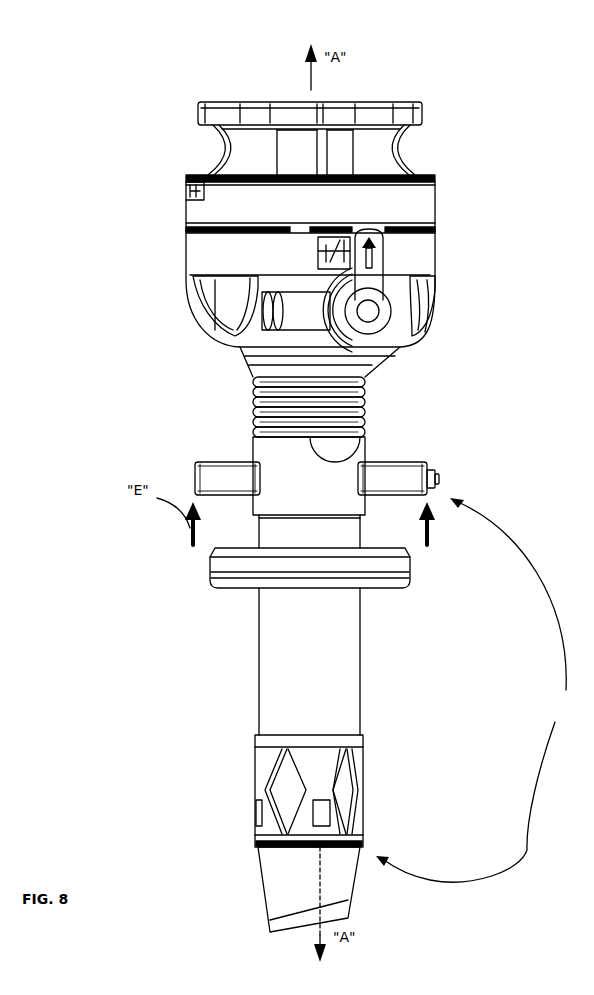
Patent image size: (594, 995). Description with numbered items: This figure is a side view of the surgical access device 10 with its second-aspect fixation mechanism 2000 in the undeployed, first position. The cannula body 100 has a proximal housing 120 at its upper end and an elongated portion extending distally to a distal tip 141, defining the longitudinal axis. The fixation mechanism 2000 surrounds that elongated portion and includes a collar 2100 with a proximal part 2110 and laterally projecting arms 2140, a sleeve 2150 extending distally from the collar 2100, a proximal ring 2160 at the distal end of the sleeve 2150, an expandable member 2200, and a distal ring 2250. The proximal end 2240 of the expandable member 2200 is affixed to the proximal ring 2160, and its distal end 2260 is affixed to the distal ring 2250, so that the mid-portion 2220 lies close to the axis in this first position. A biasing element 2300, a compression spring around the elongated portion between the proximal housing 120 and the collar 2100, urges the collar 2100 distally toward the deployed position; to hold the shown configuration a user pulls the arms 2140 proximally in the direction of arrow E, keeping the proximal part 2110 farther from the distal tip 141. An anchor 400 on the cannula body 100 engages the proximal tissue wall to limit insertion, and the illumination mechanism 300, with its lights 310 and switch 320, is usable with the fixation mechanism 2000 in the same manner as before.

The surgical access device 10 is at (472, 212).
The proximal housing 120 is at (427, 265).
The biasing element 2300 is at (345, 397).
The proximal part 2110 is at (327, 472).
The collar 2100 is at (362, 465).
The switch 320 is at (440, 477).
The fixation mechanism 2000 is at (530, 476).
The arms 2140 is at (428, 488).
The sleeve 2150 is at (345, 535).
The anchor 400 is at (222, 568).
The cannula body 100 is at (436, 683).
The illumination mechanism 300 is at (472, 690).
The proximal ring 2160 is at (280, 740).
The proximal end 2240 is at (333, 750).
The expandable member 2200 is at (378, 771).
The mid-portion 2220 is at (355, 787).
The lights 310 is at (256, 812).
The distal ring 2250 is at (258, 848).
The distal end 2260 is at (342, 823).
The distal tip 141 is at (275, 930).